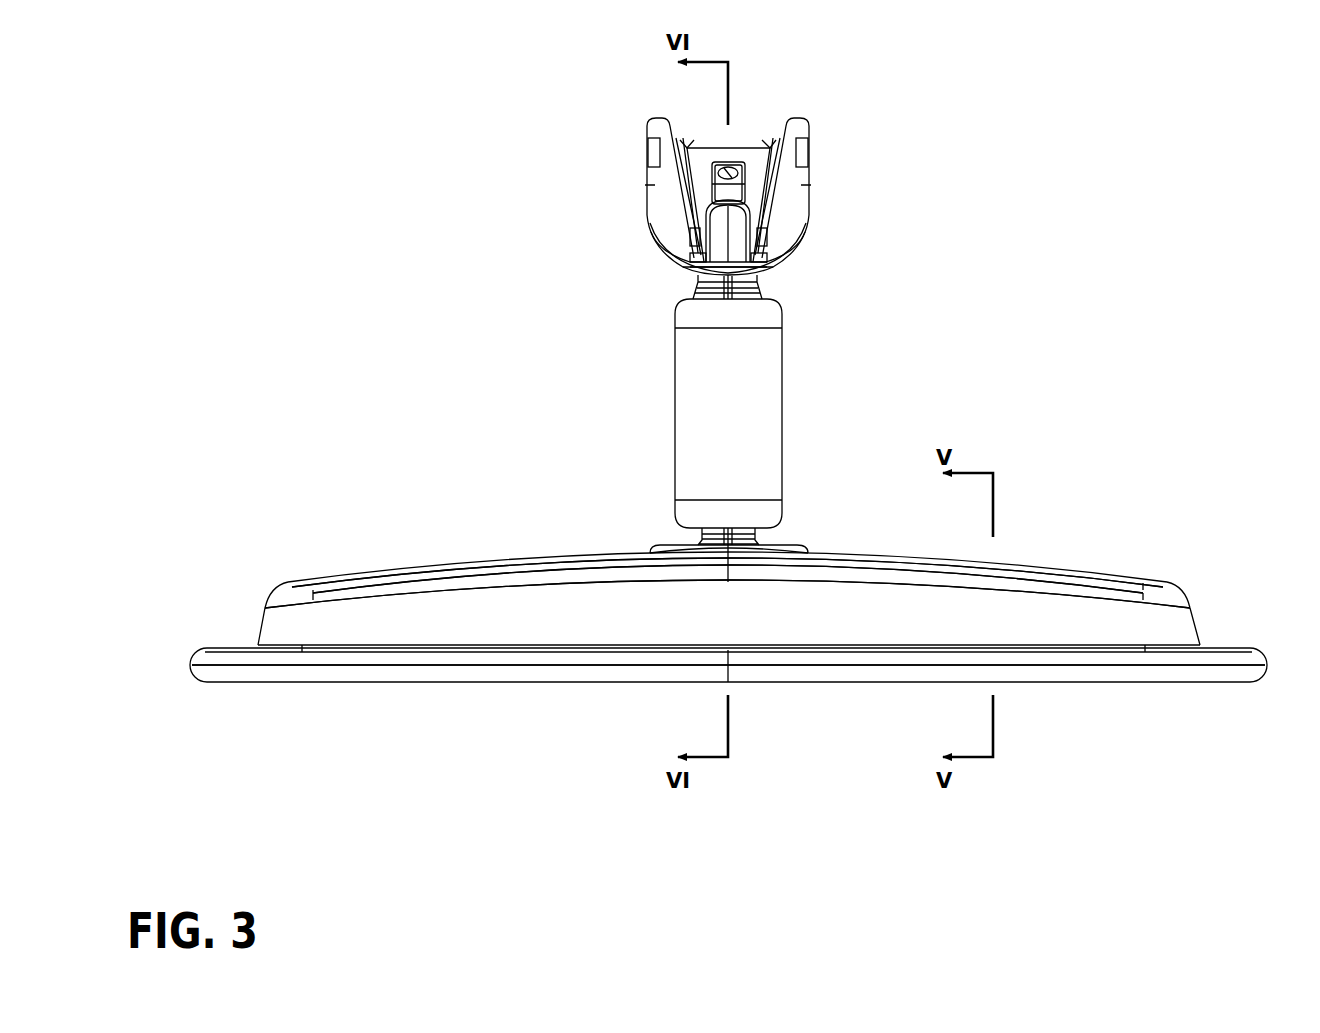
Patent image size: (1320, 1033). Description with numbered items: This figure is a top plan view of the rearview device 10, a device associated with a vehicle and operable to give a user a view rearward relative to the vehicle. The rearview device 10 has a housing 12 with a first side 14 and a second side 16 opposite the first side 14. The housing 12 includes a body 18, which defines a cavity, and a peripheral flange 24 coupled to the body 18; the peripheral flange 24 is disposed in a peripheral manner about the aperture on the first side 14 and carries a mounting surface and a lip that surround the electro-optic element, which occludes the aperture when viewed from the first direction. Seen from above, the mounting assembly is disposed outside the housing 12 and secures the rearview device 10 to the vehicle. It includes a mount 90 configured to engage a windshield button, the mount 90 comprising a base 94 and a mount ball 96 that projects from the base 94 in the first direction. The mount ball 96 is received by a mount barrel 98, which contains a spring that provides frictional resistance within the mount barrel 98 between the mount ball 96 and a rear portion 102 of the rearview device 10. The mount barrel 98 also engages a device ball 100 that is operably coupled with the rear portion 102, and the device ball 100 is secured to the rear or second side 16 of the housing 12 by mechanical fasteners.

The rearview device 10 is at (425, 219).
The housing 12 is at (1028, 567).
The first side 14 is at (1087, 688).
The second side 16 is at (823, 552).
The body 18 is at (1087, 615).
The peripheral flange 24 is at (1236, 655).
The mount 90 is at (768, 232).
The base 94 is at (658, 184).
The mount ball 96 is at (760, 278).
The mount barrel 98 is at (752, 408).
The device ball 100 is at (705, 543).
The rear portion 102 is at (500, 553).